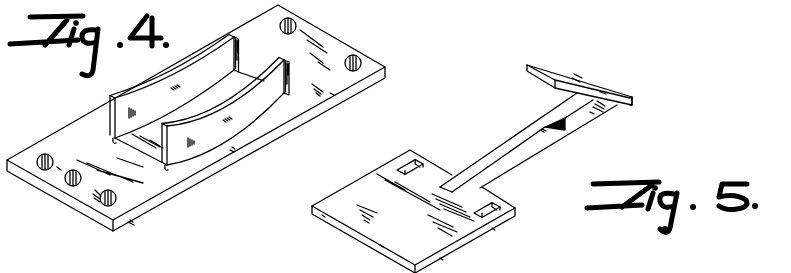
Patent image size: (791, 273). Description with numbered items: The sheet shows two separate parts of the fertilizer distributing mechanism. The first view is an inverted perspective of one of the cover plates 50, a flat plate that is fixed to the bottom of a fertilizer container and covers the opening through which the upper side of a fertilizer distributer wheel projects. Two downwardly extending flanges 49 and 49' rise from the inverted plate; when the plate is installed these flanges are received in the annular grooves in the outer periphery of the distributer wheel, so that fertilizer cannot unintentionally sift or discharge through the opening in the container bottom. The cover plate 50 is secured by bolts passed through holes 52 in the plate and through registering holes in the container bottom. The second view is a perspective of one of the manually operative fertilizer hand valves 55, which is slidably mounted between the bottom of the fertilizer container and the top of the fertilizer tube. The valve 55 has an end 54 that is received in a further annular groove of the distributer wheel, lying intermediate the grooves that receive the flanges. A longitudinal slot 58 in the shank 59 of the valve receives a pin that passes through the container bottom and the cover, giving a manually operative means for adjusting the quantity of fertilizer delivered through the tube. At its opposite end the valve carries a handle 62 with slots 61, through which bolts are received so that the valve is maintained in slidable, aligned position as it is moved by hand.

In FIG. 4, the downwardly extending flange 49 is at (238, 105).
In FIG. 4, the downwardly extending flange 49' is at (187, 100).
In FIG. 4, the cover plate 50 is at (196, 118).
In FIG. 4, the holes 52 is at (360, 58).
In FIG. 5, the end 54 is at (577, 73).
In FIG. 5, the fertilizer hand valve 55 is at (604, 118).
In FIG. 5, the longitudinal slot 58 is at (530, 137).
In FIG. 5, the shank 59 is at (634, 105).
In FIG. 5, the slots 61 is at (408, 155).
In FIG. 5, the handle 62 is at (500, 224).